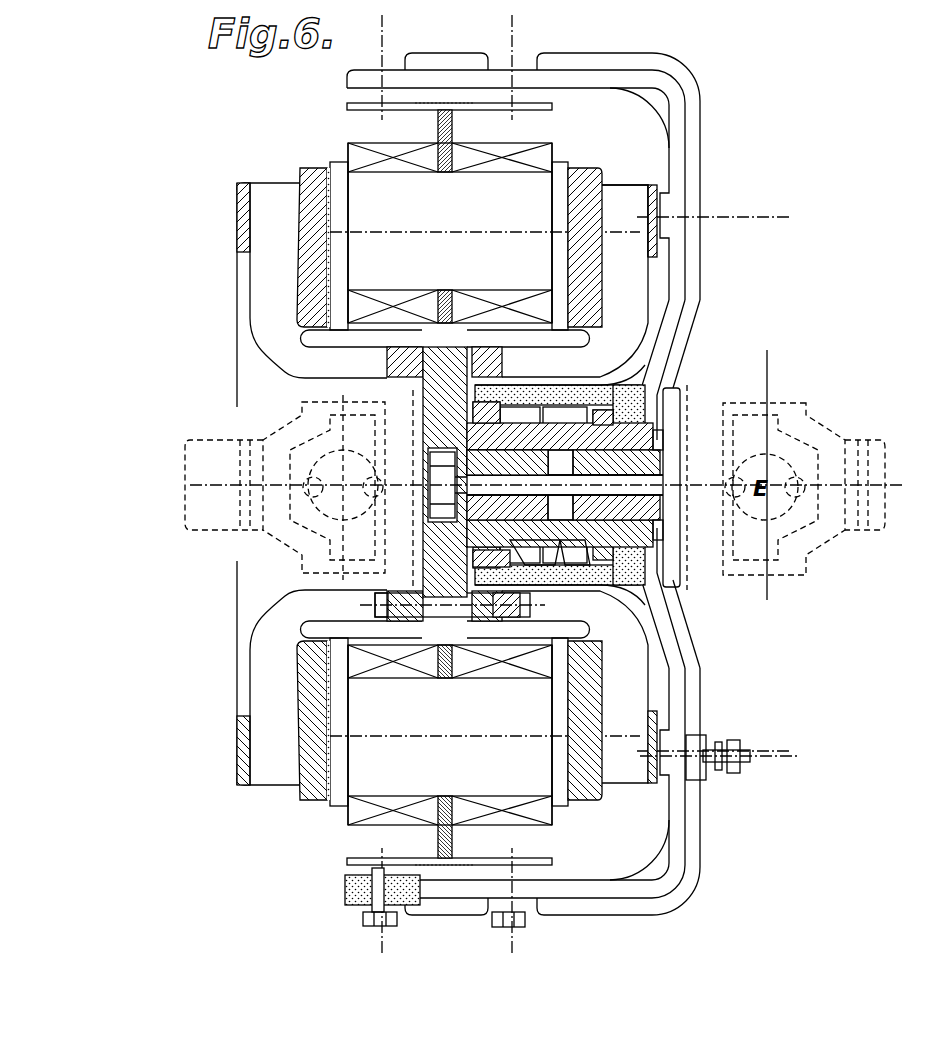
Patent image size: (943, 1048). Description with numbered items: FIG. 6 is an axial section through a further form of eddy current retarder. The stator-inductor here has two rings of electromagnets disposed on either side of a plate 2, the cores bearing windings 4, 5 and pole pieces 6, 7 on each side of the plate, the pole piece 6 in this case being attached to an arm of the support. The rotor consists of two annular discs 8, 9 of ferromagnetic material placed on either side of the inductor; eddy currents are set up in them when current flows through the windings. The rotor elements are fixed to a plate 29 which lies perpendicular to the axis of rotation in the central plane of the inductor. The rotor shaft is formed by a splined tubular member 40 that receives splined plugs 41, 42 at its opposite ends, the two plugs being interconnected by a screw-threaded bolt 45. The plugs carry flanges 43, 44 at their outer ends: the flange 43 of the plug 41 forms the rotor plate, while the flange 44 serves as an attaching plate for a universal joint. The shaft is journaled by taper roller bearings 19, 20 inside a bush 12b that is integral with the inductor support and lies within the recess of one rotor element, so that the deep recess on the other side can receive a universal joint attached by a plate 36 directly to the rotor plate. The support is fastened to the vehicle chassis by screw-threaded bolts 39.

The plate 2 is at (452, 125).
The winding 4 is at (367, 160).
The winding 5 is at (551, 143).
The pole piece 6 is at (341, 175).
The pole piece 7 is at (566, 168).
The annular disc 8 is at (313, 222).
The annular disc 9 is at (600, 188).
The bush 12b is at (590, 378).
The taper roller bearing 19 is at (517, 415).
The taper roller bearing 20 is at (558, 410).
The plate 29 is at (390, 472).
The flange 43 is at (434, 485).
The plate 36 is at (392, 548).
The screw-threaded bolt 39 is at (730, 748).
The tubular member 40 is at (600, 550).
The plug 41 is at (482, 467).
The plug 42 is at (633, 467).
The flange 44 is at (672, 407).
The screw-threaded bolt 45 is at (500, 497).